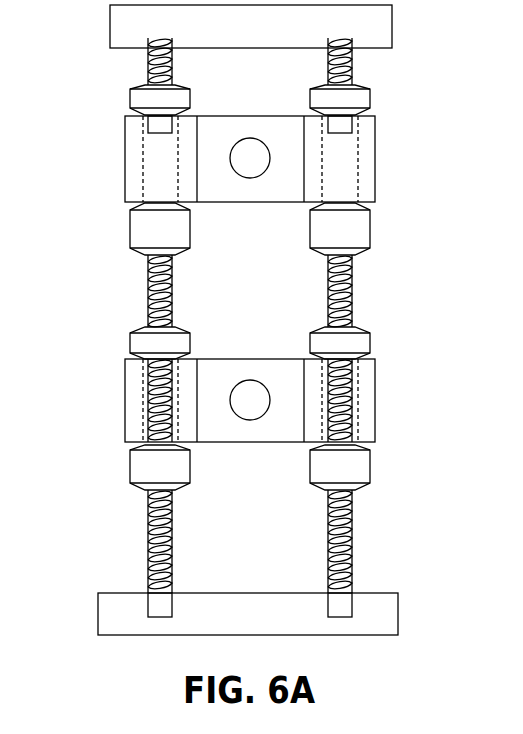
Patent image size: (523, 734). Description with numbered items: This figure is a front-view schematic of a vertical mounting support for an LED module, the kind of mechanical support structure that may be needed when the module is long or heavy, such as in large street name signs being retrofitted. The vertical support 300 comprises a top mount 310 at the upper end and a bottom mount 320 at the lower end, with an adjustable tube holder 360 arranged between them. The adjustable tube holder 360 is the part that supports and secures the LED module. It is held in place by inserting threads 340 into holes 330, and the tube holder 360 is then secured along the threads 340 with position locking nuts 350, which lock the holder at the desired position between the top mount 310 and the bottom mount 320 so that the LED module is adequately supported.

The vertical support 300 is at (85, 140).
The top mount 310 is at (392, 30).
The bottom mount 320 is at (398, 617).
The holes 330 is at (358, 153).
The threads 340 is at (352, 549).
The position locking nuts 350 is at (370, 225).
The adjustable tube holder 360 is at (375, 185).